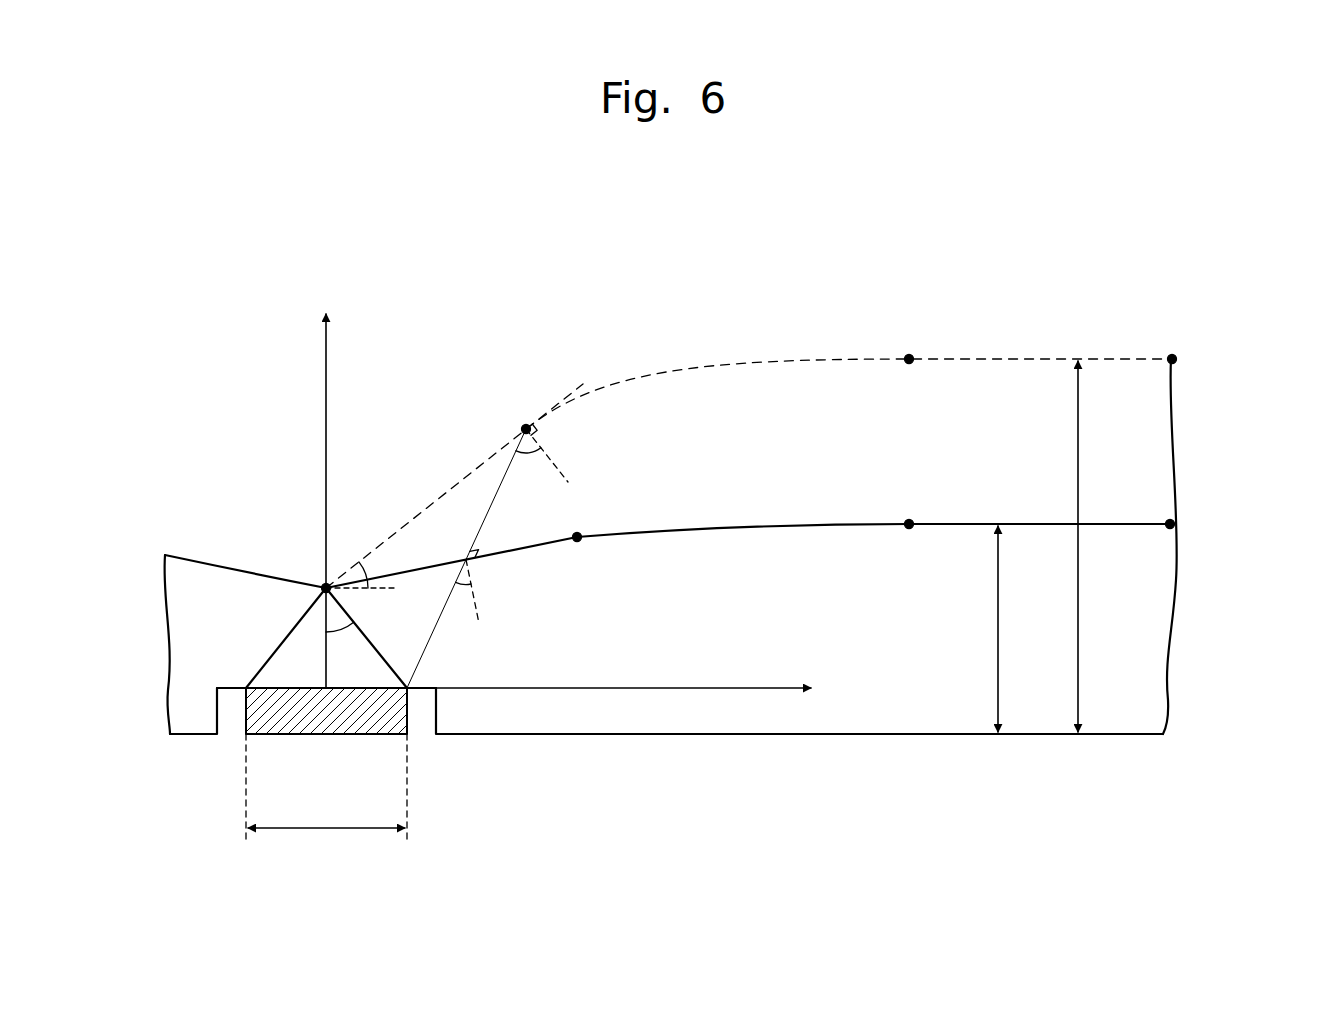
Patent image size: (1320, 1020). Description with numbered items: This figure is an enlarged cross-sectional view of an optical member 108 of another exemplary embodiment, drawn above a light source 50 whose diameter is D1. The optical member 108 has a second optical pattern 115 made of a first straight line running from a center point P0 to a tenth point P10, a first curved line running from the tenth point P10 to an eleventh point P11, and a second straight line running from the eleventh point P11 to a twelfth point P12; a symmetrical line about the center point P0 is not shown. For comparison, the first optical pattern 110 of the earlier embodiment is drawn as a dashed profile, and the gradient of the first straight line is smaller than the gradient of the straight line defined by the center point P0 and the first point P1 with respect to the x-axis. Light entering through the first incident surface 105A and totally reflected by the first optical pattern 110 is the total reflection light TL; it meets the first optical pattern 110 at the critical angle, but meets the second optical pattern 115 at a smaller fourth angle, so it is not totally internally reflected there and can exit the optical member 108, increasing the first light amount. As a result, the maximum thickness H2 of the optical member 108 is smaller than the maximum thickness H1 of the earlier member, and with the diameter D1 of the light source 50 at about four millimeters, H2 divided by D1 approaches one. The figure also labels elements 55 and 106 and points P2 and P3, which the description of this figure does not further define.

The light source 50 is at (302, 722).
The recess region 55 is at (378, 684).
The first incident surface 105A is at (384, 656).
The substrate 106 is at (925, 738).
The optical member 108 is at (1160, 624).
The first optical pattern 110 is at (733, 361).
The second optical pattern 115 is at (446, 512).
The total reflection light TL is at (434, 638).
The diameter of the light source D1 is at (326, 798).
The maximum thickness of the optical member of the earlier embodiment H1 is at (1097, 546).
The maximum thickness of the optical member H2 is at (1017, 629).
The center point P0 is at (322, 584).
The first point P1 is at (525, 424).
The point P2 is at (910, 354).
The point P3 is at (1172, 354).
The tenth point P10 is at (577, 542).
The eleventh point P11 is at (909, 529).
The twelfth point P12 is at (1178, 523).